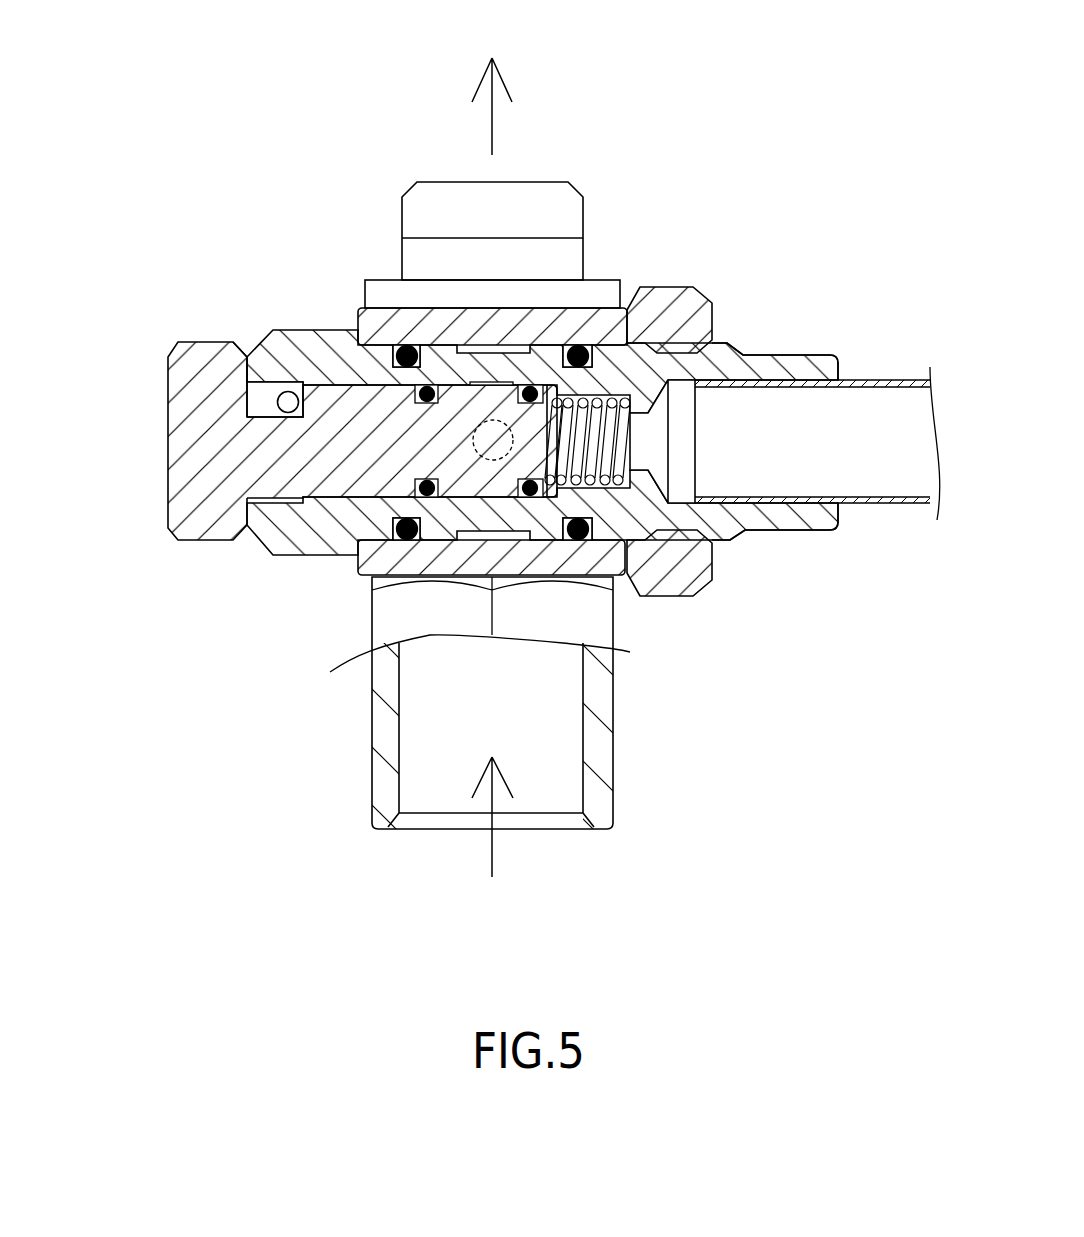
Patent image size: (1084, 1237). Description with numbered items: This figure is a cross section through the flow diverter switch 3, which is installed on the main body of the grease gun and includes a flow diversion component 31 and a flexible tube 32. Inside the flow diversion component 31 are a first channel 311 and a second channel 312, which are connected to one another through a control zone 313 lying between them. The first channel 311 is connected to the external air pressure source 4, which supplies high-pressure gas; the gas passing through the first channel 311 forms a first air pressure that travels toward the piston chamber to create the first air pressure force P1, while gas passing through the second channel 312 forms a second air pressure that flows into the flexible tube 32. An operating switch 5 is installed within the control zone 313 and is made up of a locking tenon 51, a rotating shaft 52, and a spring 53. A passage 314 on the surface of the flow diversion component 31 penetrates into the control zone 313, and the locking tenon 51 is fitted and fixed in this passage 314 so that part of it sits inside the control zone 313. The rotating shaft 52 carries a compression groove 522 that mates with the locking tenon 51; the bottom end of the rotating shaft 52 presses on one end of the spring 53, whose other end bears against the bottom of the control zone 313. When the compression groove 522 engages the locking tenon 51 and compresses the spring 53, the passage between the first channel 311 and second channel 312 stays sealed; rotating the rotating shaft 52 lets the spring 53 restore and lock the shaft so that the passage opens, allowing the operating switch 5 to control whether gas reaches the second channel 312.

The flow diverter switch 3 is at (335, 292).
The flow diversion component 31 is at (583, 220).
The first channel 311 is at (583, 676).
The second channel 312 is at (743, 398).
The control zone 313 is at (448, 435).
The passage 314 is at (260, 400).
The flexible tube 32 is at (890, 382).
The external air pressure source 4 is at (492, 857).
The operating switch 5 is at (137, 440).
The locking tenon 51 is at (287, 392).
The rotating shaft 52 is at (167, 508).
The compression groove 522 is at (252, 378).
The spring 53 is at (600, 487).
The first air pressure force P1 is at (493, 77).